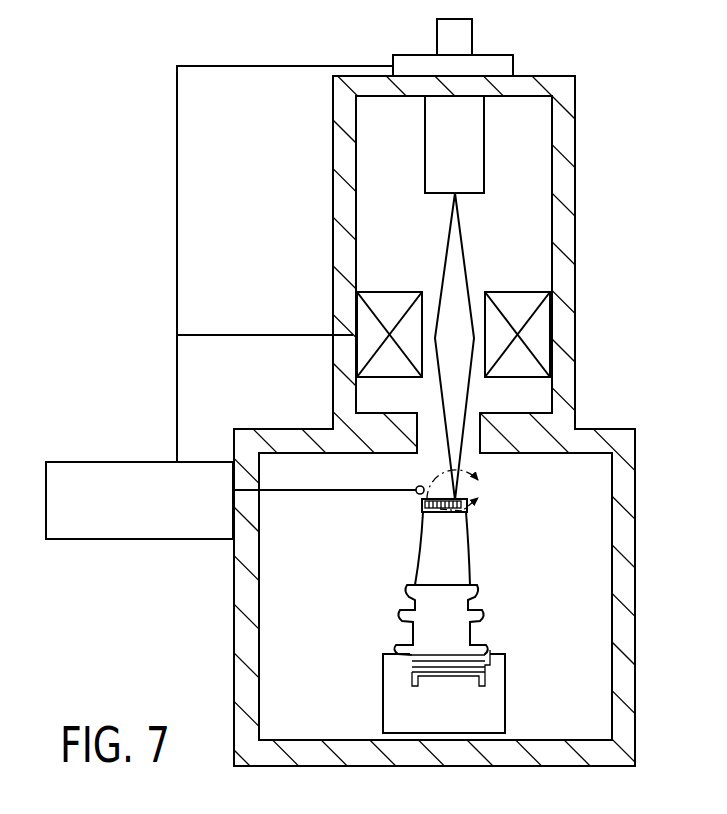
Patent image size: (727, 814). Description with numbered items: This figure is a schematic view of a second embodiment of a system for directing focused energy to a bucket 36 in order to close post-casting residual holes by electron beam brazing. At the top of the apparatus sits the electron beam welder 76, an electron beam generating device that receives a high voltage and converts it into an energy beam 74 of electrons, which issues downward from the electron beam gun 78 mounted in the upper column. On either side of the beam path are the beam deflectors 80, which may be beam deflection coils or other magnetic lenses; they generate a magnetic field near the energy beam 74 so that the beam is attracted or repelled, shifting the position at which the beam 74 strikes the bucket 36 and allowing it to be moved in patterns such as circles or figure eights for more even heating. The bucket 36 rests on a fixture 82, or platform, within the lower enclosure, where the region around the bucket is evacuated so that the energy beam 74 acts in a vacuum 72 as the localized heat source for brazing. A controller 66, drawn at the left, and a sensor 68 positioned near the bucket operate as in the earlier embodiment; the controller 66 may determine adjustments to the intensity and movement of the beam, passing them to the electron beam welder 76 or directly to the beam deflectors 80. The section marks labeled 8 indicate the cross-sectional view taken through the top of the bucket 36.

The section view 8-8 indicator 8 is at (465, 494).
The bucket 36 is at (470, 565).
The controller 66 is at (90, 462).
The sensor 68 is at (418, 486).
The vacuum 72 is at (585, 492).
The energy beam 74 is at (460, 232).
The electron beam welder 76 is at (500, 55).
The electron beam gun 78 is at (484, 167).
The beam deflectors 80 is at (392, 292).
The fixture 82 is at (487, 702).